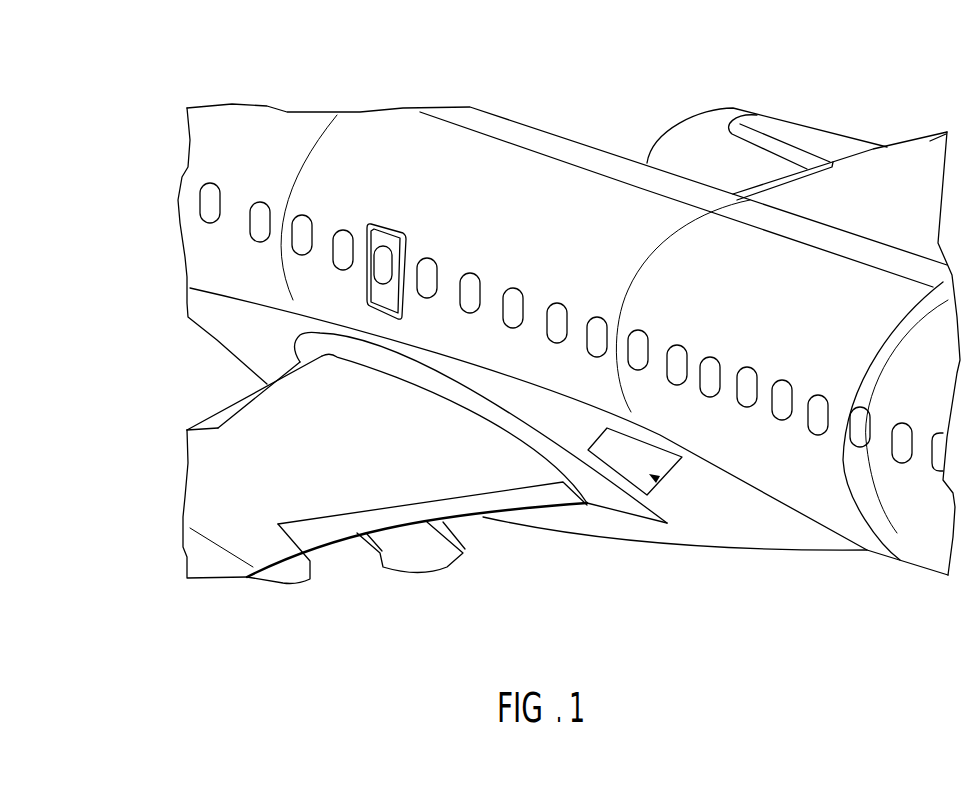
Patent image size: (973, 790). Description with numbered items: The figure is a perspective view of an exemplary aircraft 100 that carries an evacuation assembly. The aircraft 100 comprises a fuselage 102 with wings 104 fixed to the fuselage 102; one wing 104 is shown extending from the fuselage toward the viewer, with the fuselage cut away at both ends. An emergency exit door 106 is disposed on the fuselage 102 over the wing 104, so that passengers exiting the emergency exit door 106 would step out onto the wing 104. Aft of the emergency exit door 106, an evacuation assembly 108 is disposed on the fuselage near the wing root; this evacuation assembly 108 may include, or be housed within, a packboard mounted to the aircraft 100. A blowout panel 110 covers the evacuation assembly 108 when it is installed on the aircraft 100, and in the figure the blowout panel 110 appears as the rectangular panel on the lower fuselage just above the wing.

The aircraft 100 is at (135, 97).
The fuselage 102 is at (207, 262).
The wing 104 is at (373, 447).
The emergency exit door 106 is at (378, 222).
The evacuation assembly 108 is at (663, 477).
The blowout panel 110 is at (652, 477).